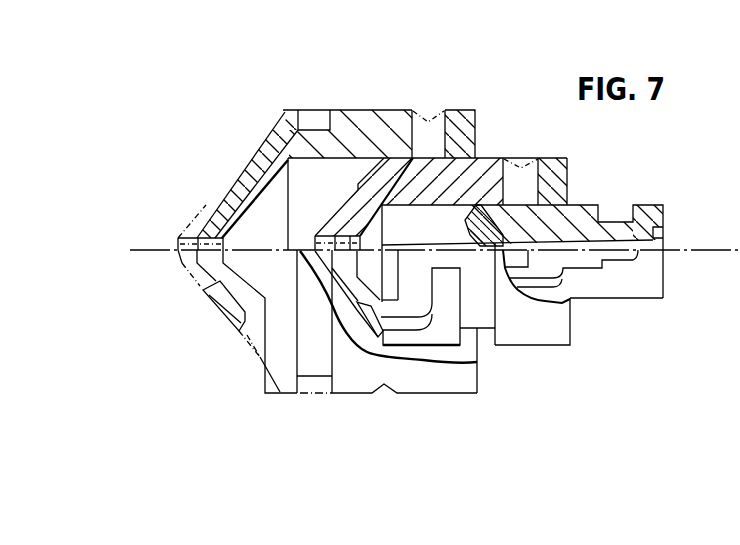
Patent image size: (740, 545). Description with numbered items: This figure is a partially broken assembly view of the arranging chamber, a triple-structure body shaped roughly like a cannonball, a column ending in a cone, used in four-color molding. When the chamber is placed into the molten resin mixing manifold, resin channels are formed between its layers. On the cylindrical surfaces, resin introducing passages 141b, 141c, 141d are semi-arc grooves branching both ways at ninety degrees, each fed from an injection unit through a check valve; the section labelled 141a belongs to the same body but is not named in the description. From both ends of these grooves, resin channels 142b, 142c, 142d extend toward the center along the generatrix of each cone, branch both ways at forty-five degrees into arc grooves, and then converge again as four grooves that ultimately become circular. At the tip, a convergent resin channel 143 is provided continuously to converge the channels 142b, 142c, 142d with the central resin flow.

The body member 141a is at (621, 240).
The resin introducing passage 141b is at (488, 308).
The resin introducing passage 141c is at (605, 258).
The resin introducing passage 141d is at (308, 358).
The resin channel 142b is at (334, 221).
The resin channel 142c is at (475, 210).
The resin channel 142d is at (204, 209).
The convergent resin channel 143 is at (178, 245).